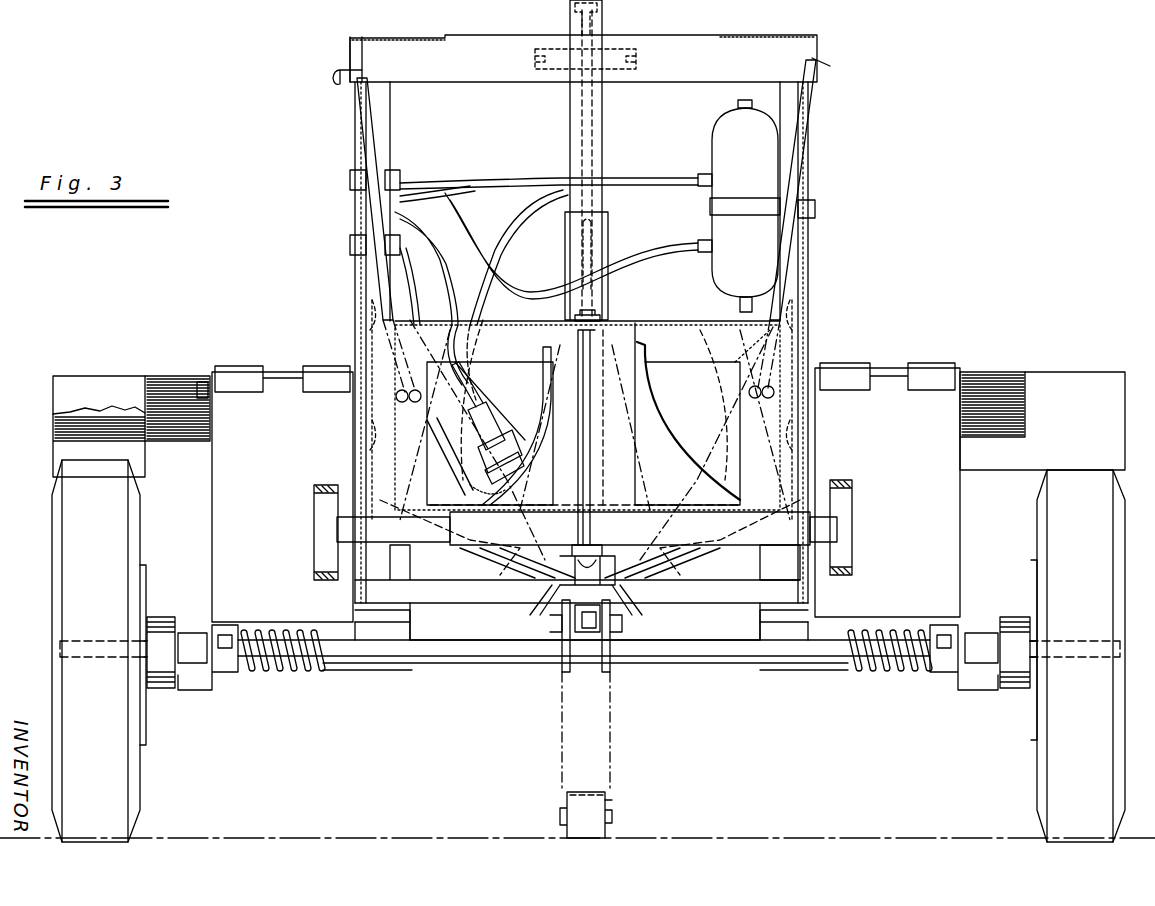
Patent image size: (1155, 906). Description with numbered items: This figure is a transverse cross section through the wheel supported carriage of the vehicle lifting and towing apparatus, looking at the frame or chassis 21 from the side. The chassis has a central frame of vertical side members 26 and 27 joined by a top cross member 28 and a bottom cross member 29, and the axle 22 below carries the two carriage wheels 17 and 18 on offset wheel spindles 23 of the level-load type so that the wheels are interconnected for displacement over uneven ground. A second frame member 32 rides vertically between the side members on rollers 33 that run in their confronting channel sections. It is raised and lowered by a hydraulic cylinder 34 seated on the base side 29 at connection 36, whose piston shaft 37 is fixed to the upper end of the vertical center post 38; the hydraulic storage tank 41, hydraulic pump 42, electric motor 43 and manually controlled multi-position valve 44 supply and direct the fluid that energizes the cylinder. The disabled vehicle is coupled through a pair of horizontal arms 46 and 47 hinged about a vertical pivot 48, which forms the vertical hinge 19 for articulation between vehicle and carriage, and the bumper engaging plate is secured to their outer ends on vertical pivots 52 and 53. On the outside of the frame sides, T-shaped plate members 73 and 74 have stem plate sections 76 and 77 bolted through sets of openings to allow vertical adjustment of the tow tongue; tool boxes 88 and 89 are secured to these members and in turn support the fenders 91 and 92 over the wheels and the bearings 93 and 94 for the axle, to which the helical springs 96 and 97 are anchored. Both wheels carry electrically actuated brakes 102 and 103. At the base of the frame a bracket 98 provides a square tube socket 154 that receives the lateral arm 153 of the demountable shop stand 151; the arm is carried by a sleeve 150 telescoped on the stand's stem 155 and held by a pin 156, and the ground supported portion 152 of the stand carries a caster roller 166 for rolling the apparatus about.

The carriage wheel 17 is at (52, 516).
The carriage wheel 18 is at (1037, 516).
The vertical hinge 19 is at (592, 406).
The frame or chassis 21 is at (818, 331).
The axle 22 is at (688, 656).
The offset wheel spindles 23 is at (96, 648).
The vertical side member 26 is at (357, 266).
The vertical side member 27 is at (808, 255).
The top cross member 28 is at (504, 38).
The bottom cross member 29 is at (482, 610).
The second frame member 32 is at (696, 315).
The rollers 33 is at (368, 318).
The hydraulic cylinder 34 is at (608, 224).
The connection 36 is at (595, 550).
The piston shaft 37 is at (595, 126).
The vertical center post 38 is at (570, 126).
The hydraulic storage tank 41 is at (758, 170).
The hydraulic pump 42 is at (500, 420).
The electric motor 43 is at (500, 450).
The manually controlled multi-position valve 44 is at (392, 180).
The arm 46 is at (460, 548).
The arm 47 is at (747, 530).
The vertical pivot 48 is at (598, 310).
The vertical pivot 52 is at (322, 485).
The vertical pivot 53 is at (845, 480).
The T-shaped plate member 73 is at (415, 612).
The T-shaped plate member 74 is at (772, 604).
The stem plate section 76 is at (356, 582).
The stem plate section 77 is at (812, 604).
The tool box 88 is at (282, 534).
The tool box 89 is at (920, 534).
The fender 91 is at (68, 385).
The fender 92 is at (1060, 390).
The bearing 93 is at (232, 660).
The bearing 94 is at (940, 665).
The helical spring 96 is at (290, 675).
The helical spring 97 is at (878, 675).
The bracket 98 is at (600, 672).
The brake 102 is at (1026, 730).
The brake 103 is at (159, 582).
The sleeve 150 is at (560, 615).
The shop stand 151 is at (610, 800).
The ground supported portion 152 is at (600, 792).
The lateral arm 153 is at (580, 625).
The socket 154 is at (612, 612).
The stem 155 is at (612, 750).
The pin 156 is at (625, 624).
The caster wheel or roller 166 is at (578, 795).